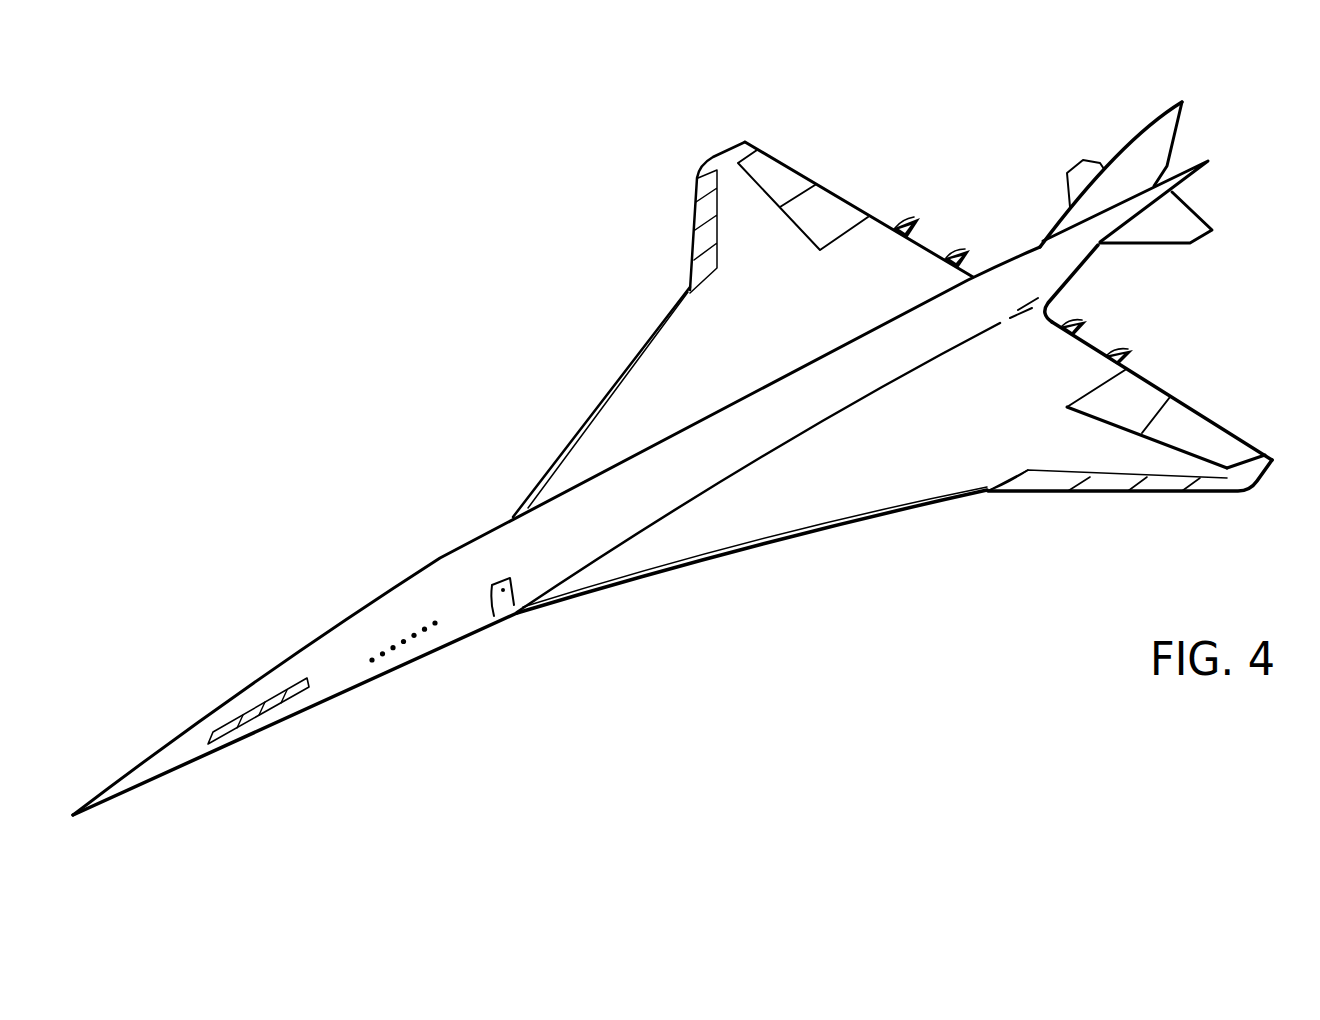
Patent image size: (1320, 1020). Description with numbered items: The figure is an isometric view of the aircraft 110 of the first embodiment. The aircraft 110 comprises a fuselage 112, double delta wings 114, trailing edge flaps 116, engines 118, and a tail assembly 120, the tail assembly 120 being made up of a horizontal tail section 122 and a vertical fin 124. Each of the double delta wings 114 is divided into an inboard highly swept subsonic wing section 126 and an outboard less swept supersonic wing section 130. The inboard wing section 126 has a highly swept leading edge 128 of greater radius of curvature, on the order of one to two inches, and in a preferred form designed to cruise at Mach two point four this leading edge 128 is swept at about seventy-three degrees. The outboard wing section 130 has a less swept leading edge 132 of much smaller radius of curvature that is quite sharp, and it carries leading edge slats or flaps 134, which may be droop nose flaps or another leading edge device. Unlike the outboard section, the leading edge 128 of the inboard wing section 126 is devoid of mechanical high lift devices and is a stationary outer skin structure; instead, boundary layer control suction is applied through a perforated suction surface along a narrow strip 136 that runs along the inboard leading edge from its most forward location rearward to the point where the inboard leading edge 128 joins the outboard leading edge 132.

The aircraft 110 is at (458, 474).
The fuselage 112 is at (423, 585).
The double delta wings 114 is at (912, 467).
The trailing edge flaps 116 is at (1192, 423).
The engines 118 is at (1112, 350).
The tail assembly 120 is at (1098, 125).
The horizontal tail section 122 is at (1077, 183).
The vertical fin 124 is at (1118, 160).
The inboard highly swept wing section 126 is at (683, 535).
The leading edge of inboard wing section 128 is at (757, 548).
The outboard less swept wing section 130 is at (1042, 455).
The less swept leading edge 132 is at (1097, 493).
The leading edge slats or flaps 134 is at (1148, 493).
The boundary layer suction strip 136 is at (835, 533).